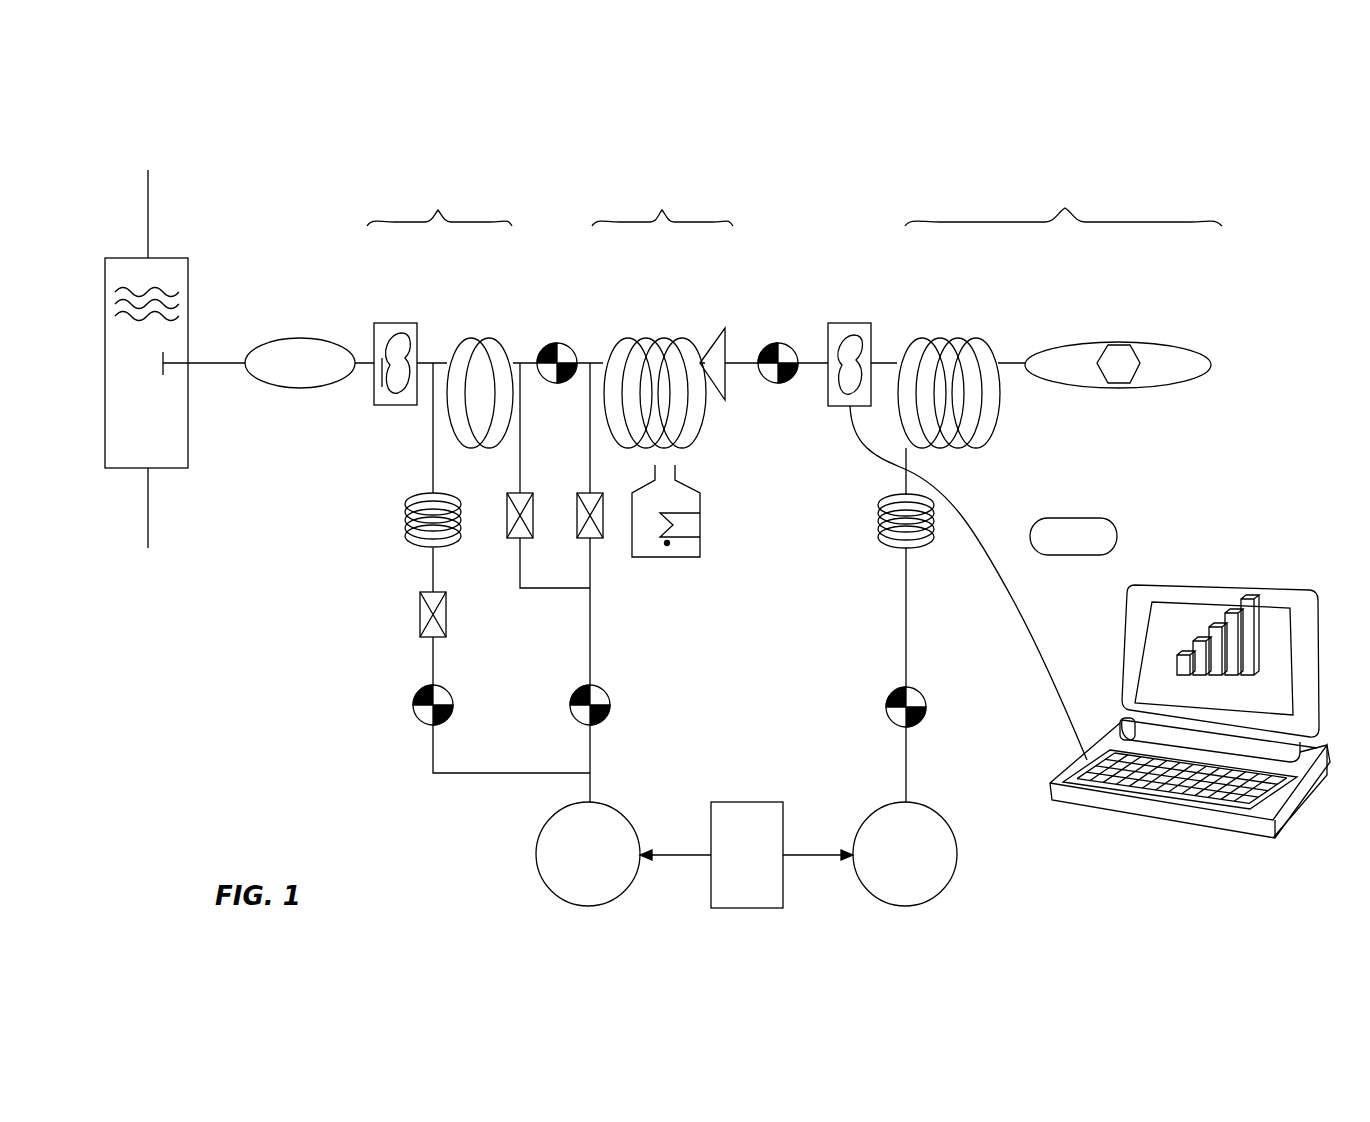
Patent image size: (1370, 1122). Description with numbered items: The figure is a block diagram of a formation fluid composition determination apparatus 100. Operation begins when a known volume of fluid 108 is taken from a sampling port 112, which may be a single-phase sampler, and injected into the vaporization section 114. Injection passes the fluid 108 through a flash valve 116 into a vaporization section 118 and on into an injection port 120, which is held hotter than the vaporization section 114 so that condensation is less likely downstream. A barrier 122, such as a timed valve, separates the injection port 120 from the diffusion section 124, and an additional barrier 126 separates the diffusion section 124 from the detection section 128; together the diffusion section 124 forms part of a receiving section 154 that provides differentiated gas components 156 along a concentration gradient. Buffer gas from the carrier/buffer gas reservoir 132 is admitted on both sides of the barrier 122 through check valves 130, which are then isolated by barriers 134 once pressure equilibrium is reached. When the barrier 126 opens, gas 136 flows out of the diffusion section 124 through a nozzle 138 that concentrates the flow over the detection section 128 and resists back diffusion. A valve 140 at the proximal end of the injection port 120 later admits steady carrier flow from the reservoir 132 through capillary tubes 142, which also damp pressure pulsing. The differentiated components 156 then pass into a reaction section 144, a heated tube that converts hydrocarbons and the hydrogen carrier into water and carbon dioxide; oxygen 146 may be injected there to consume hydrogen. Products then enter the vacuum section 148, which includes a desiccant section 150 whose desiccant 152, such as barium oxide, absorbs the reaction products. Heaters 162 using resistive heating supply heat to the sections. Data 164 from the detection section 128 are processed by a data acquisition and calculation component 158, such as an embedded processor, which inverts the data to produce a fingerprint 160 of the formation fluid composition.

The formation fluid composition determination apparatus 100 is at (1262, 182).
The fluid 108 is at (160, 302).
The sampling port 112 is at (168, 258).
The vaporization section 114 is at (439, 203).
The flash valve 116 is at (294, 338).
The vaporization section 118 is at (393, 323).
The injection port 120 is at (483, 338).
The barrier 122 is at (557, 343).
The diffusion section 124 is at (662, 338).
The additional barrier 126 is at (778, 343).
The detection section 128 is at (848, 323).
The check valves 130 is at (590, 540).
The carrier/buffer gas reservoir 132 is at (625, 815).
The barriers 134 is at (414, 716).
The gas 136 is at (382, 395).
The nozzle 138 is at (712, 340).
The valve 140 is at (420, 618).
The capillary tubes 142 is at (405, 520).
The reaction section 144 is at (957, 338).
The oxygen 146 is at (940, 813).
The vacuum section 148 is at (1063, 203).
The desiccant section 150 is at (1068, 343).
The desiccant 152 is at (1097, 376).
The receiving section 154 is at (662, 202).
The differentiated components 156 is at (832, 388).
The data acquisition and calculation component 158 is at (1282, 812).
The fingerprint 160 is at (1215, 625).
The heaters 162 is at (667, 545).
The data 164 is at (1088, 518).